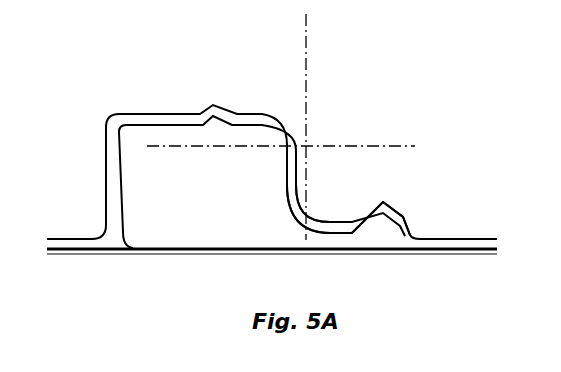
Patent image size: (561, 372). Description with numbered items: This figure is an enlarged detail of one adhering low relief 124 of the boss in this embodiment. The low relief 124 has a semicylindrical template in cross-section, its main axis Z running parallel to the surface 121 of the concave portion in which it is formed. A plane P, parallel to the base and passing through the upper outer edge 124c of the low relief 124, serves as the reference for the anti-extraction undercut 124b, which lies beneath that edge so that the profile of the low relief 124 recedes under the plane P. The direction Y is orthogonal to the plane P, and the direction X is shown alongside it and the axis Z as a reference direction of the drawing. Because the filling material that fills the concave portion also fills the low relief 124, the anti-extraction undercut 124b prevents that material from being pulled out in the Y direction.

The surface of the concave portion 121 is at (283, 130).
The adhering low relief 124 is at (322, 215).
The anti-extraction undercut 124b is at (299, 186).
The upper outer edge of the low relief 124c is at (306, 146).
The plane P is at (196, 148).
The X axis X is at (281, 168).
The direction orthogonal to plane P Y is at (308, 26).
The main axis of the low relief Z is at (347, 175).